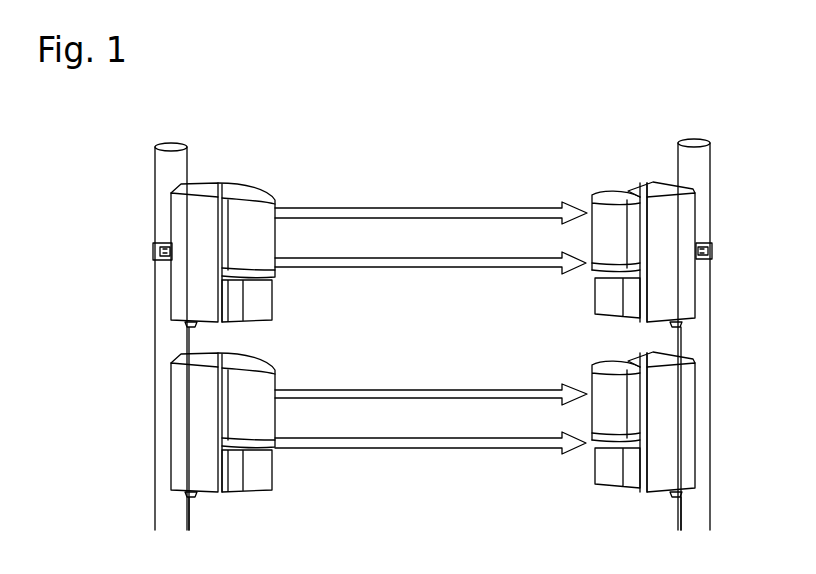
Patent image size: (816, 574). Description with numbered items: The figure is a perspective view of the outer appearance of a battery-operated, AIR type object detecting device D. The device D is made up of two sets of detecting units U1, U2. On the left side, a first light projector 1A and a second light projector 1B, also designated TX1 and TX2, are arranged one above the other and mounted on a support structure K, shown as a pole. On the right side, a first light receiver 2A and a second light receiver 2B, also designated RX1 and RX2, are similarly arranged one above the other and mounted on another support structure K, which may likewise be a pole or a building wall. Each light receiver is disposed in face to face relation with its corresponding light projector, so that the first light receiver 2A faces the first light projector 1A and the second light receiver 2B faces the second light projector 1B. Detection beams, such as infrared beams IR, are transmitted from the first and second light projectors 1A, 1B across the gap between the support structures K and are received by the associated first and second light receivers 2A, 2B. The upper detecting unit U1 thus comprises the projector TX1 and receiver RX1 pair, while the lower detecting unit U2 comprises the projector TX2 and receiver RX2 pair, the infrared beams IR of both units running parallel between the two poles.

The object detecting device D is at (688, 103).
The support structure K is at (165, 182).
The detecting unit U1 is at (470, 140).
The detecting unit U2 is at (470, 355).
The first light projector TX1 is at (225, 186).
The first light receiver RX1 is at (623, 190).
The second light projector TX2 is at (276, 367).
The second light receiver RX2 is at (592, 362).
The infrared beam IR is at (431, 346).
The first light projector 1A is at (272, 305).
The first light receiver 2A is at (595, 313).
The second light projector 1B is at (273, 475).
The second light receiver 2B is at (596, 470).